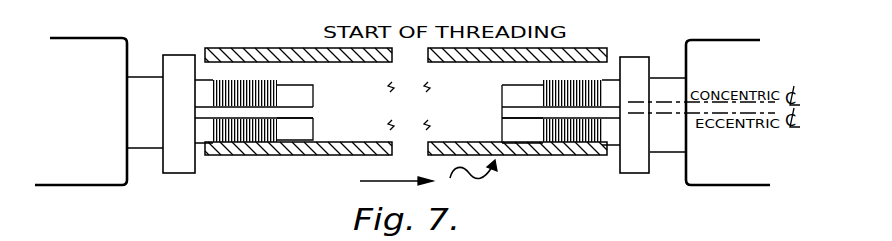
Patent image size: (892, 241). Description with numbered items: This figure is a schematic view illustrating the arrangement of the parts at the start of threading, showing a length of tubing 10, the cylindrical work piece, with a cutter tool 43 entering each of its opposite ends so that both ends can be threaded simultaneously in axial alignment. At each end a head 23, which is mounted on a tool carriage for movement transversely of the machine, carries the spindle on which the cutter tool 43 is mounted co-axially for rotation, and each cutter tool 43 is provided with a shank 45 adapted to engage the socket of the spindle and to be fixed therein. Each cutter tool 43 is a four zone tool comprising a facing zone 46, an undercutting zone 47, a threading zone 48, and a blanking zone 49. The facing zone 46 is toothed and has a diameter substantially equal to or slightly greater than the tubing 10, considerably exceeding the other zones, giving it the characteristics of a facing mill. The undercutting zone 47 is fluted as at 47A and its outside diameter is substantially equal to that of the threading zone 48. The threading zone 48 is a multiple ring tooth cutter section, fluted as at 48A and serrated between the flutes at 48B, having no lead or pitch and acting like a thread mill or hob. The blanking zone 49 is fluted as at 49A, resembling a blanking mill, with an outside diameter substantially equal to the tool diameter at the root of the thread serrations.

The tubing 10 is at (216, 50).
The head 23 is at (87, 45).
The cutter tool 43 is at (189, 46).
The shank 45 is at (140, 98).
The facing zone 46 is at (195, 127).
The undercutting zone 47 is at (200, 138).
The flutes of undercutting zone 47A is at (209, 100).
The threading zone 48 is at (545, 166).
The flutes of threading zone 48A is at (262, 108).
The serrations of threading zone 48B is at (272, 84).
The blanking zone 49 is at (305, 130).
The flutes of blanking zone 49A is at (305, 117).